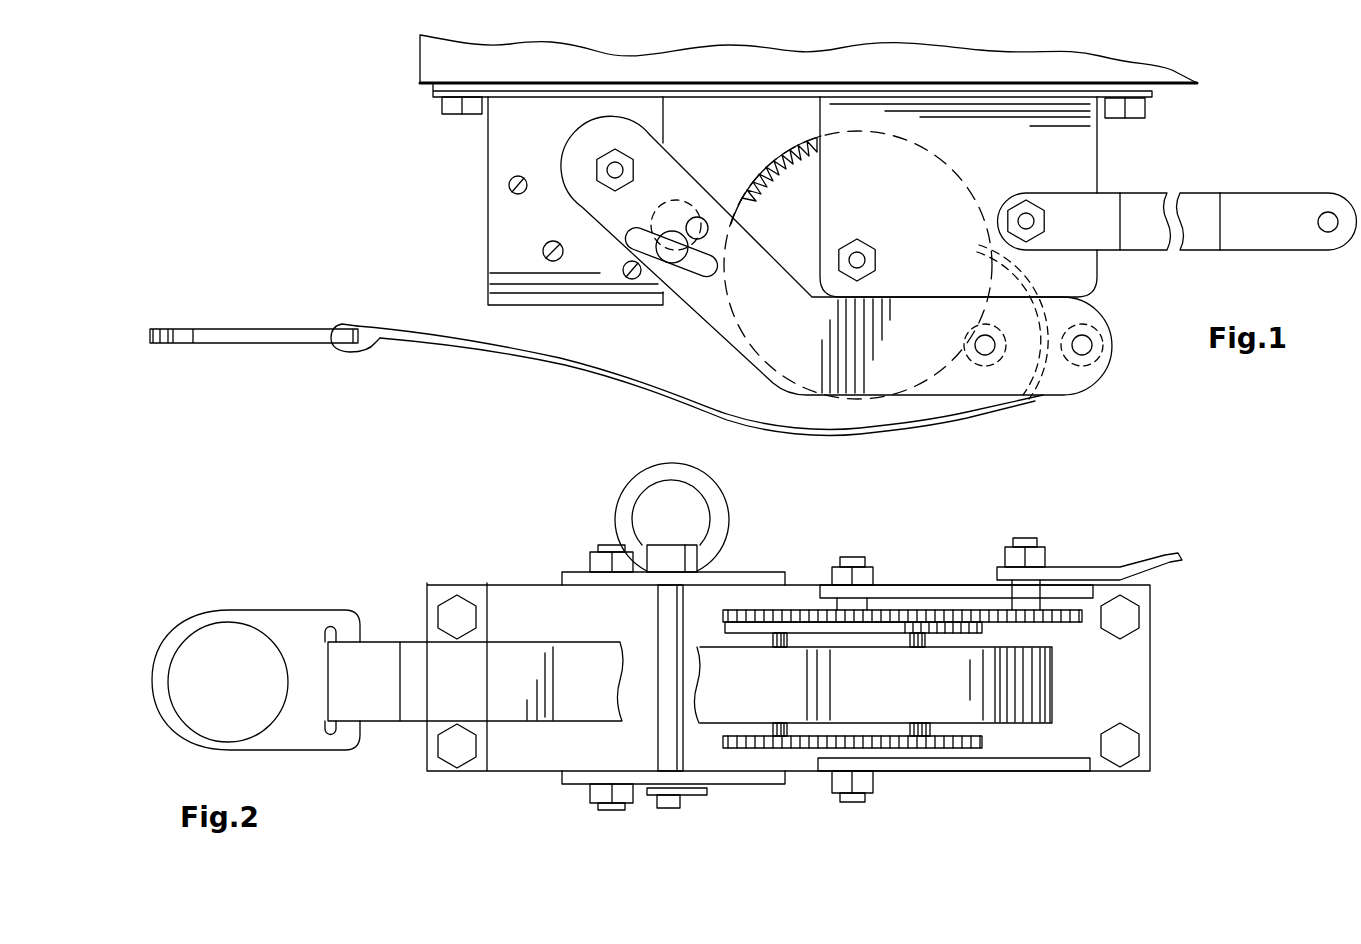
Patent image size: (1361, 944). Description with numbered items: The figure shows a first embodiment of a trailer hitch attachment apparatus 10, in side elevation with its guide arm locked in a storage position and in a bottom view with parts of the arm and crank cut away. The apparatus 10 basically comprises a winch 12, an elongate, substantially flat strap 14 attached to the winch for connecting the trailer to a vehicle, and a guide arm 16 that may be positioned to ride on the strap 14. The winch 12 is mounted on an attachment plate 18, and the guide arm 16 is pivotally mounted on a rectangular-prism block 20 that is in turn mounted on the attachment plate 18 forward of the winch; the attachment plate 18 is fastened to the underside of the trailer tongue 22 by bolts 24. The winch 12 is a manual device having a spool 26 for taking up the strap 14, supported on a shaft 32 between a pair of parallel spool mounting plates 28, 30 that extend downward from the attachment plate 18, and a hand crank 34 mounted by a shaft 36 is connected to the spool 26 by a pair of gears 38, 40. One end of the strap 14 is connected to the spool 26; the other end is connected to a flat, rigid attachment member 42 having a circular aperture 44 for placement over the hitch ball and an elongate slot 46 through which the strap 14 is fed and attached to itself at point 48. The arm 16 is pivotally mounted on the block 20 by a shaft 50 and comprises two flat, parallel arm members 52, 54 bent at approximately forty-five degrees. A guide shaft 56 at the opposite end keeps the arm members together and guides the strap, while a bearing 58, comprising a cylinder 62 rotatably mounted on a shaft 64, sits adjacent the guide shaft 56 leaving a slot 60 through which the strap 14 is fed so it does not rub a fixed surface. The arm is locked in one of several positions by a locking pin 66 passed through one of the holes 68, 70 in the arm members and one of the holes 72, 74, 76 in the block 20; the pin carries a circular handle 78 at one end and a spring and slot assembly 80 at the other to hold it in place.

In FIG. 1, the trailer hitch attachment apparatus 10 is at (350, 195).
In FIG. 2, the trailer hitch attachment apparatus 10 is at (412, 815).
In FIG. 1, the winch 12 is at (1133, 172).
In FIG. 2, the winch 12 is at (1015, 745).
In FIG. 1, the strap 14 is at (730, 422).
In FIG. 2, the strap 14 is at (410, 643).
In FIG. 1, the guide arm 16 is at (718, 363).
In FIG. 1, the attachment plate 18 is at (1158, 93).
In FIG. 2, the attachment plate 18 is at (456, 773).
In FIG. 1, the block 20 is at (487, 163).
In FIG. 2, the block 20 is at (523, 765).
In FIG. 1, the tongue 22 is at (1140, 68).
In FIG. 1, the bolts 24 is at (452, 115).
In FIG. 2, the bolts 24 is at (456, 612).
In FIG. 1, the spool 26 is at (782, 160).
In FIG. 2, the spool 26 is at (803, 750).
In FIG. 1, the spool mounting plate 28 is at (1082, 142).
In FIG. 2, the spool mounting plate 28 is at (905, 598).
In FIG. 2, the spool mounting plate 30 is at (987, 772).
In FIG. 1, the shaft 32 is at (856, 250).
In FIG. 2, the shaft 32 is at (858, 802).
In FIG. 1, the hand crank 34 is at (1282, 192).
In FIG. 2, the hand crank 34 is at (1090, 567).
In FIG. 1, the shaft 36 is at (1024, 212).
In FIG. 2, the shaft 36 is at (1028, 538).
In FIG. 2, the gear 38 is at (985, 606).
In FIG. 2, the gear 40 is at (808, 612).
In FIG. 1, the attachment member 42 is at (228, 328).
In FIG. 2, the attachment member 42 is at (243, 609).
In FIG. 2, the circular aperture 44 is at (283, 675).
In FIG. 2, the elongate slot 46 is at (328, 627).
In FIG. 1, the point 48 is at (368, 357).
In FIG. 2, the point 48 is at (383, 695).
In FIG. 1, the shaft 50 is at (613, 160).
In FIG. 2, the shaft 50 is at (612, 805).
In FIG. 2, the arm member 52 is at (785, 572).
In FIG. 2, the arm member 54 is at (748, 785).
In FIG. 1, the guide shaft 56 is at (1085, 345).
In FIG. 1, the bearing 58 is at (997, 372).
In FIG. 1, the slot 60 is at (1055, 372).
In FIG. 1, the cylinder 62 is at (980, 335).
In FIG. 1, the shaft 64 is at (980, 343).
In FIG. 2, the locking pin 66 is at (684, 684).
In FIG. 1, the hole 68 is at (700, 216).
In FIG. 1, the hole 70 is at (664, 222).
In FIG. 1, the hole 72 is at (636, 280).
In FIG. 1, the hole 74 is at (545, 254).
In FIG. 1, the hole 76 is at (512, 190).
In FIG. 1, the circular handle 78 is at (610, 228).
In FIG. 2, the circular handle 78 is at (632, 483).
In FIG. 2, the spring and slot assembly 80 is at (673, 812).